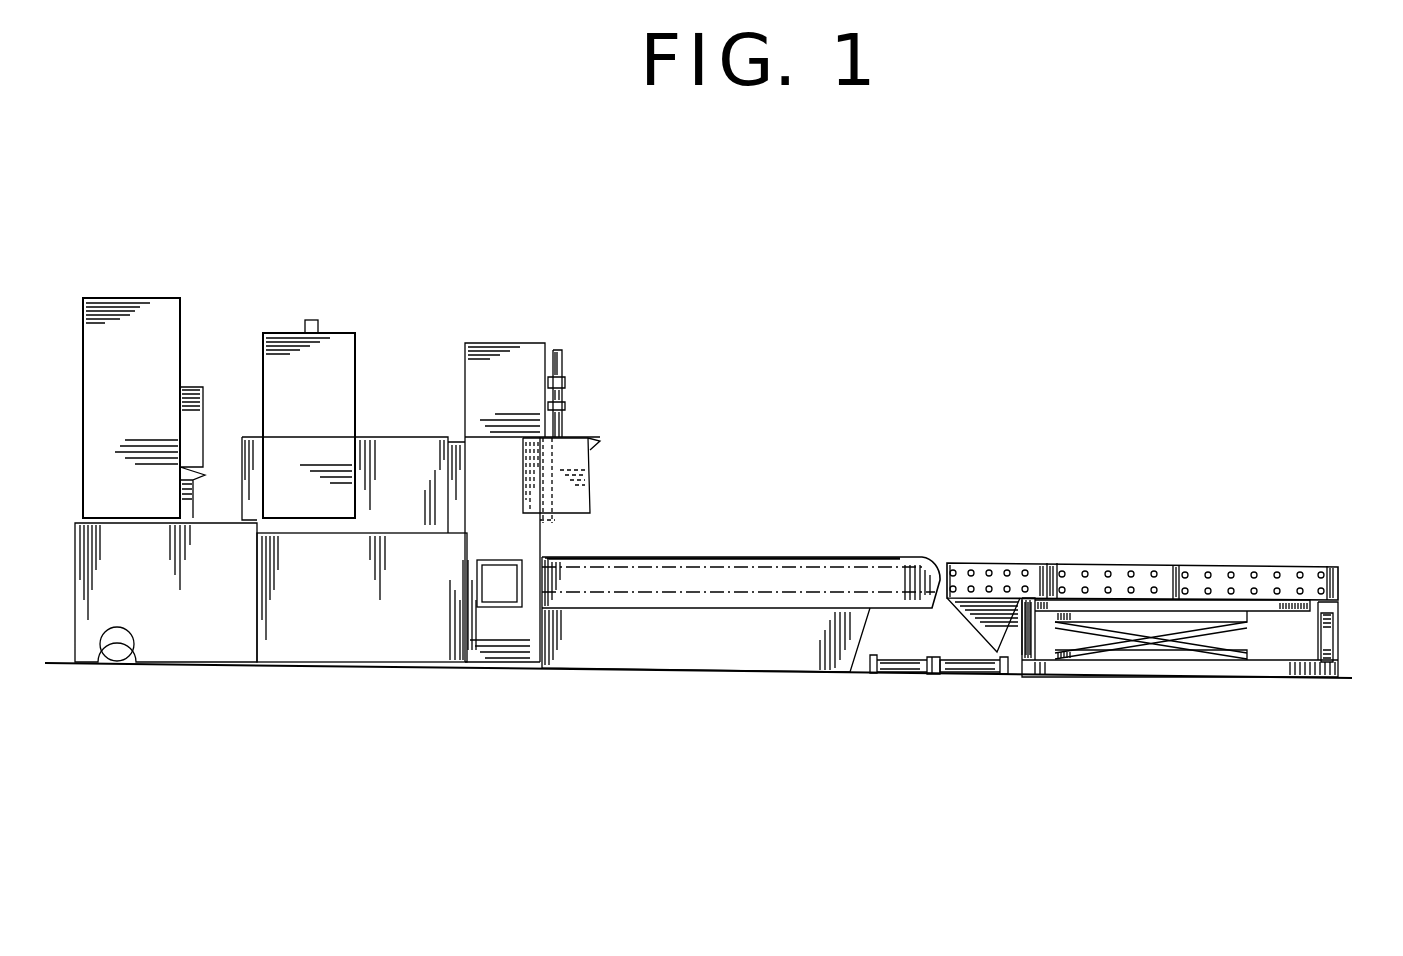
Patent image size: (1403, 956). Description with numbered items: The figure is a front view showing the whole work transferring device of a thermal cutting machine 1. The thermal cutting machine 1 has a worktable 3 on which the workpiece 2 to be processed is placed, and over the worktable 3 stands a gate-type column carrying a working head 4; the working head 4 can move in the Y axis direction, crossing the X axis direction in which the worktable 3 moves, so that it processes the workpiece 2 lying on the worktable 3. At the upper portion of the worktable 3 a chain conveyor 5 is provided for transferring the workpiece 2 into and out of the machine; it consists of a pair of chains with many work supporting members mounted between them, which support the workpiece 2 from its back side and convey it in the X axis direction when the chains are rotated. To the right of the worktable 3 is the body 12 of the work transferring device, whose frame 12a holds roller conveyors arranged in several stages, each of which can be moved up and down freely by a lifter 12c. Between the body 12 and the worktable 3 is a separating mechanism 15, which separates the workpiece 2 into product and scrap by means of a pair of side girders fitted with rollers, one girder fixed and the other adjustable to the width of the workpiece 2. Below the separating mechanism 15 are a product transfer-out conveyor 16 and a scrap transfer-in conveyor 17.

The thermal cutting machine 1 is at (499, 328).
The workpiece 2 is at (747, 557).
The worktable 3 is at (741, 600).
The working head 4 is at (547, 521).
The chain conveyor 5 is at (806, 590).
The body of the work transferring device 12 is at (1212, 613).
The frame 12a is at (1251, 590).
The lifter 12c is at (1125, 640).
The separating mechanism 15 is at (983, 563).
The product transfer-out conveyor 16 is at (979, 678).
The scrap transfer-in conveyor 17 is at (905, 676).